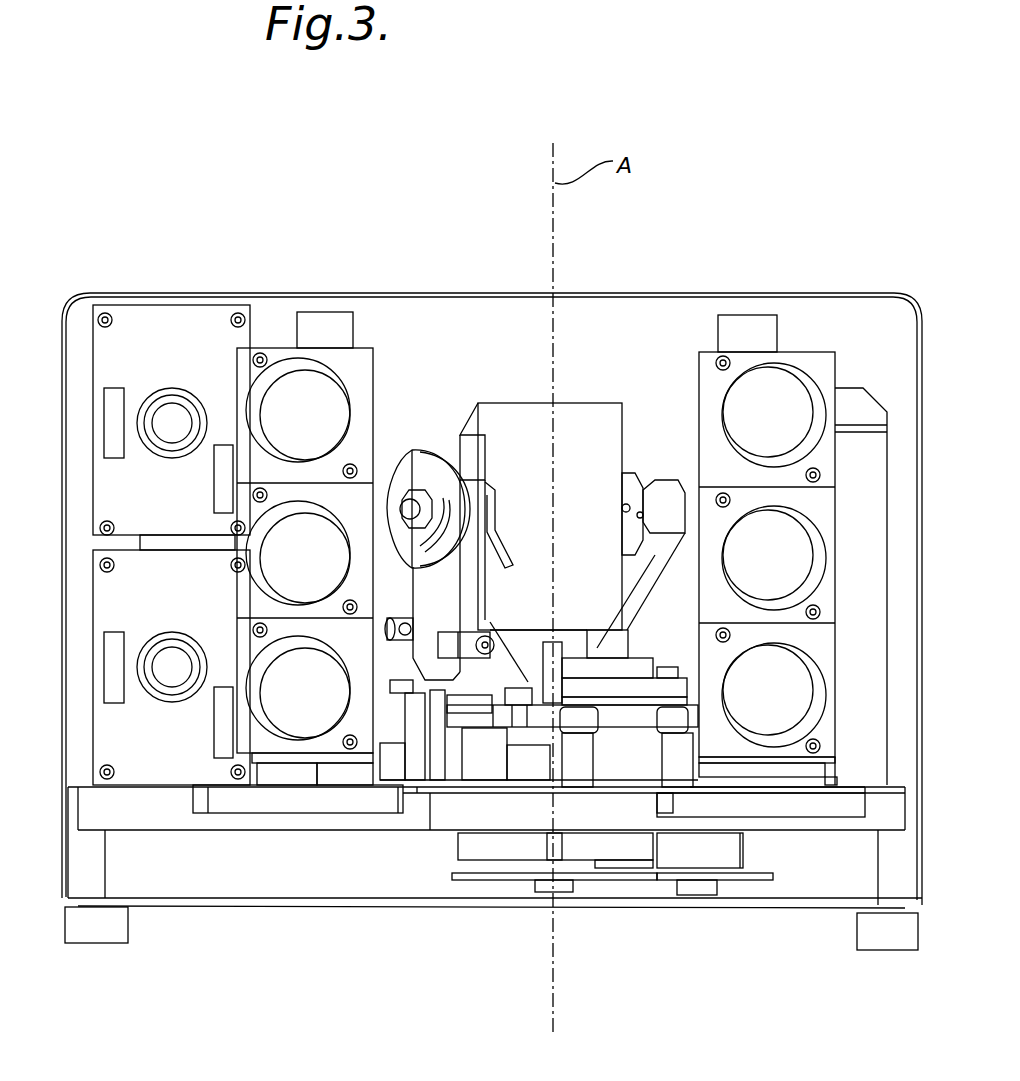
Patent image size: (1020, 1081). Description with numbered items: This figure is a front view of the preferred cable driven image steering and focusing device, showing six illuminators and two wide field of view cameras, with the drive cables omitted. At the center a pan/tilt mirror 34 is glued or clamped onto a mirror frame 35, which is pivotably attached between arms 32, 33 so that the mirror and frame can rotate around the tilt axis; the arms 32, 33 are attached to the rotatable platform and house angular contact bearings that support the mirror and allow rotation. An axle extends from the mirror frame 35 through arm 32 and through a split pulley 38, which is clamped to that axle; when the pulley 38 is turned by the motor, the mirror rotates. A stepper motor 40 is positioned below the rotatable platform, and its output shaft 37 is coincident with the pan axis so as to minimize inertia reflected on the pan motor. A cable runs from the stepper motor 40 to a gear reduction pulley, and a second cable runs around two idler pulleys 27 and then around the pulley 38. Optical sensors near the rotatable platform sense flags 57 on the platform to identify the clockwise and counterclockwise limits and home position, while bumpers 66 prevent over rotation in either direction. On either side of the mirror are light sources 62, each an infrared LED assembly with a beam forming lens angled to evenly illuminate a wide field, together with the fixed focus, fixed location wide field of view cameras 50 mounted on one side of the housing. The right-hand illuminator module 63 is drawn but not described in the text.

The wide field of view camera 50 is at (183, 325).
The light source 62 is at (358, 360).
The right lens module 63 is at (823, 362).
The pan/tilt mirror 34 is at (590, 420).
The split pulley 38 is at (430, 465).
The mirror frame 35 is at (640, 480).
The arm 33 is at (693, 572).
The idler pulley 27 is at (392, 612).
The arm 32 is at (413, 659).
The output shaft 37 is at (553, 655).
The flag 57 is at (437, 762).
The bumper 66 is at (693, 723).
The stepper motor 40 is at (525, 850).